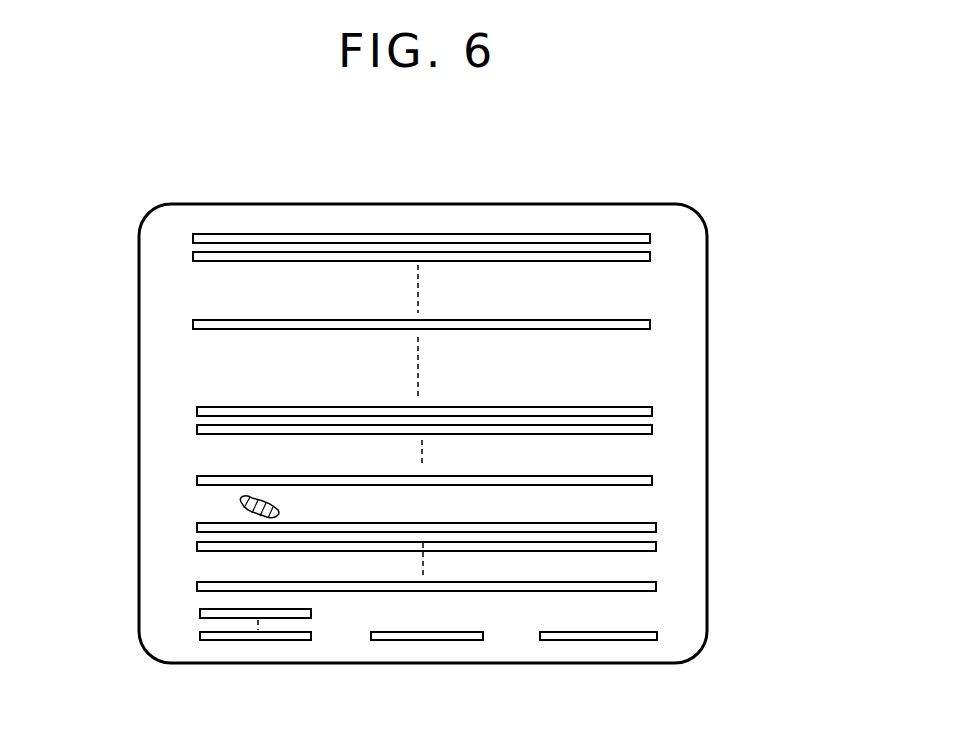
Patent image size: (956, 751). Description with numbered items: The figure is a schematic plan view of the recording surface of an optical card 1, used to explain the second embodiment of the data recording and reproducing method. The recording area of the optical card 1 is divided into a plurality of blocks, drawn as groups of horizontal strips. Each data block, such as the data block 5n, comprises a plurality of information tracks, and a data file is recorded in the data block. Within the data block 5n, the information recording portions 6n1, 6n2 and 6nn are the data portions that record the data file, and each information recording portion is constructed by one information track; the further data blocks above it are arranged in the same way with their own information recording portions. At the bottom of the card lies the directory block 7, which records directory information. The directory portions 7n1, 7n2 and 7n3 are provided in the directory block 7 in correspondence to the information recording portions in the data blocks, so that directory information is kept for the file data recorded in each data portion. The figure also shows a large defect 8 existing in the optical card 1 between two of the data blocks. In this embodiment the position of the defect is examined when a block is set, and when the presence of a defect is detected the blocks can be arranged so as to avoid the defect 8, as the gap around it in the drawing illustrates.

The optical card 1 is at (605, 204).
The data block 5n is at (414, 566).
The information recording portion 6n1 is at (197, 530).
The information recording portion 6n2 is at (197, 548).
The information recording portion 6nn is at (197, 587).
The directory block 7 is at (404, 662).
The directory portion 7n1 is at (244, 640).
The directory portion 7n2 is at (421, 640).
The directory portion 7n3 is at (588, 640).
The defect 8 is at (282, 506).